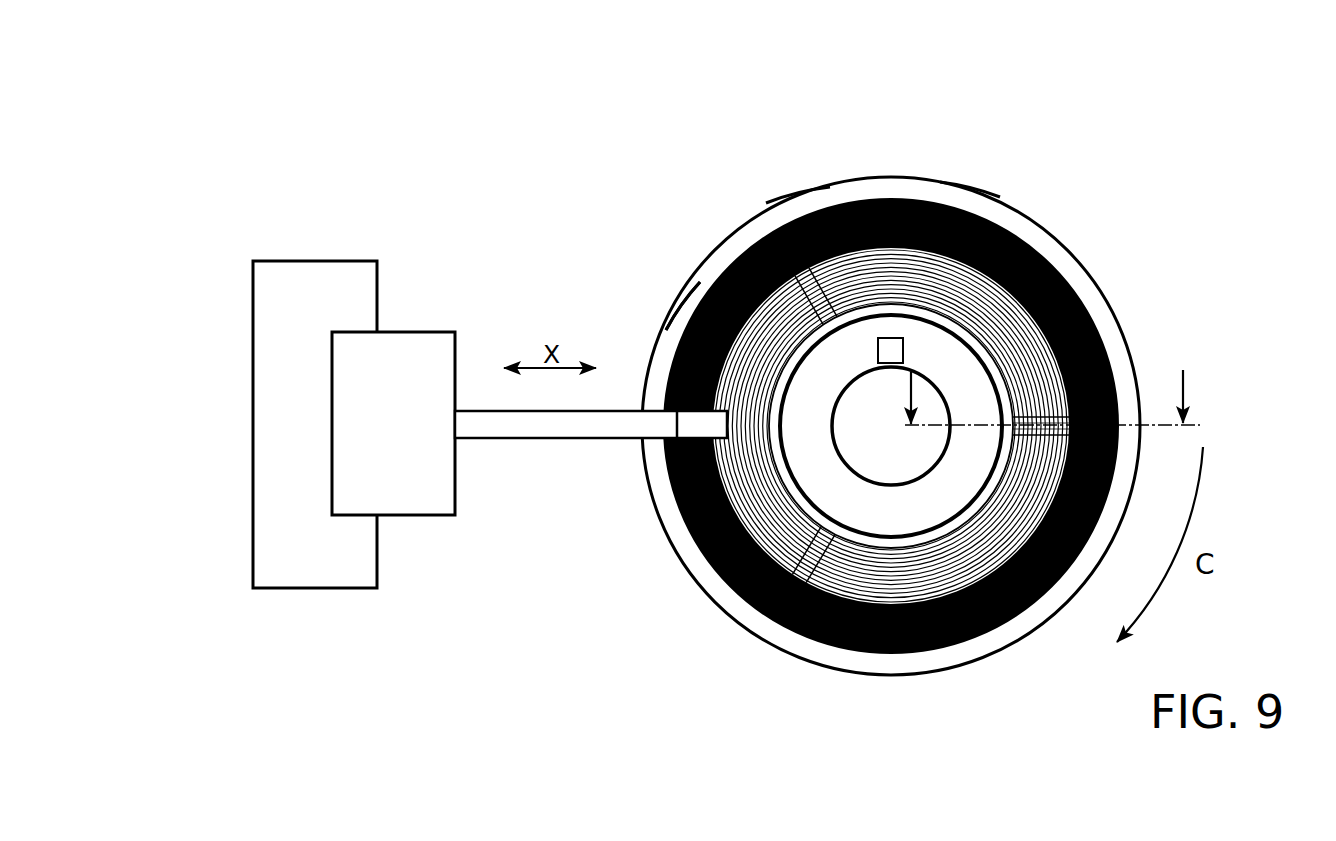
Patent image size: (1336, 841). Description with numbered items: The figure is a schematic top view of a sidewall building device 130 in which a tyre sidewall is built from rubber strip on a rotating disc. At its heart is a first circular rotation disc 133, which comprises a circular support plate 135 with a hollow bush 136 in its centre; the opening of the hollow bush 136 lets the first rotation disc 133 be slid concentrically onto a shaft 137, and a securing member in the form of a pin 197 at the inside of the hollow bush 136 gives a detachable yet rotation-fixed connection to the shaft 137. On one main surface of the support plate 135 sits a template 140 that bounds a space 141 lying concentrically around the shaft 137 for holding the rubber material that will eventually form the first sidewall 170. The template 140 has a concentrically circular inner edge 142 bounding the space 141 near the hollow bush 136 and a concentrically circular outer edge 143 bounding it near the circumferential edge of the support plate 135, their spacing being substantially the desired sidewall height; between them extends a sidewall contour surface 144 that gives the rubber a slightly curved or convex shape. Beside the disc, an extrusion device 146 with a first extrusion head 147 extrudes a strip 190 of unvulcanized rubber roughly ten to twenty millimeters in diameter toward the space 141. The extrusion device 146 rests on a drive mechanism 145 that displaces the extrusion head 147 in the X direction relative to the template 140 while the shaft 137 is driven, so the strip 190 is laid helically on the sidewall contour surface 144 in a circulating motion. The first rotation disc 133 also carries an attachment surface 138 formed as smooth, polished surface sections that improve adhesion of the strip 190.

The sidewall building device 130 is at (327, 150).
The first circular rotation disc 133 is at (722, 250).
The circular support plate 135 is at (768, 202).
The hollow bush 136 is at (840, 493).
The shaft 137 is at (888, 440).
The attachment surface 138 is at (1068, 415).
The template 140 is at (960, 195).
The space 141 is at (1020, 350).
The inner edge 142 is at (882, 303).
The outer edge 143 is at (856, 188).
The sidewall contour surface 144 is at (980, 297).
The drive mechanism 145 is at (271, 567).
The extrusion device 146 is at (416, 498).
The first extrusion head 147 is at (568, 428).
The first sidewall 170 is at (678, 333).
The strip 190 is at (683, 306).
The pin 197 is at (896, 348).